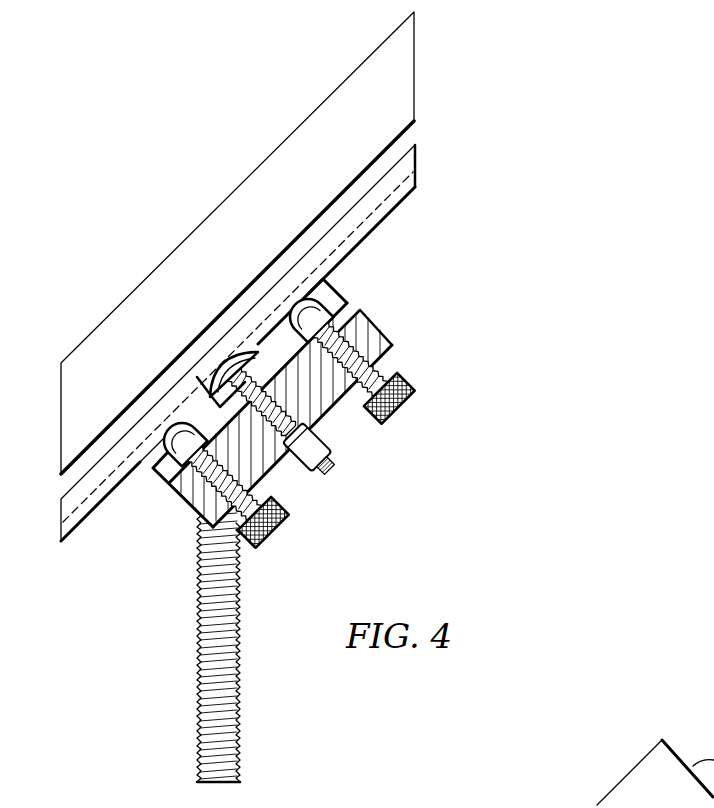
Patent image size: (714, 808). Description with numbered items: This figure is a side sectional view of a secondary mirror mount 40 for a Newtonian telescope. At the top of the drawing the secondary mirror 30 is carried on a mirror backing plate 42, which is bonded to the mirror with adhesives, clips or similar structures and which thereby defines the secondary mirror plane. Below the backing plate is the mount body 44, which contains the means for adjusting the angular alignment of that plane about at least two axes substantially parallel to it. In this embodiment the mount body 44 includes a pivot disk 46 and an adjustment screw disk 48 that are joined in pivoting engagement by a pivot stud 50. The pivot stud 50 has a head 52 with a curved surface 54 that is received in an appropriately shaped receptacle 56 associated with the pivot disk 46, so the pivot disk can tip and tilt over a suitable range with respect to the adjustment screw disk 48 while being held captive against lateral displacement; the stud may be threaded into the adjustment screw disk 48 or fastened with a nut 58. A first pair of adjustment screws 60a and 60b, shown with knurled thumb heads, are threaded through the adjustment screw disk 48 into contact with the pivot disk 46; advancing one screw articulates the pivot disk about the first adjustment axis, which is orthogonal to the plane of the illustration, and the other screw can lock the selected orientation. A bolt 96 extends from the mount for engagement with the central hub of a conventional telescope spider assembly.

The secondary mirror 30 is at (356, 68).
The mirror backing plate 42 is at (418, 156).
The secondary mirror mount 40 is at (429, 246).
The mount body 44 is at (175, 501).
The pivot disk 46 is at (345, 302).
The adjustment screw disk 48 is at (380, 335).
The pivot stud 50 is at (362, 448).
The head 52 is at (243, 386).
The curved surface 54 is at (237, 392).
The receptacle 56 is at (262, 356).
The nut 58 is at (296, 465).
The adjustment screw 60a is at (273, 545).
The adjustment screw 60b is at (410, 403).
The bolt 96 is at (241, 706).